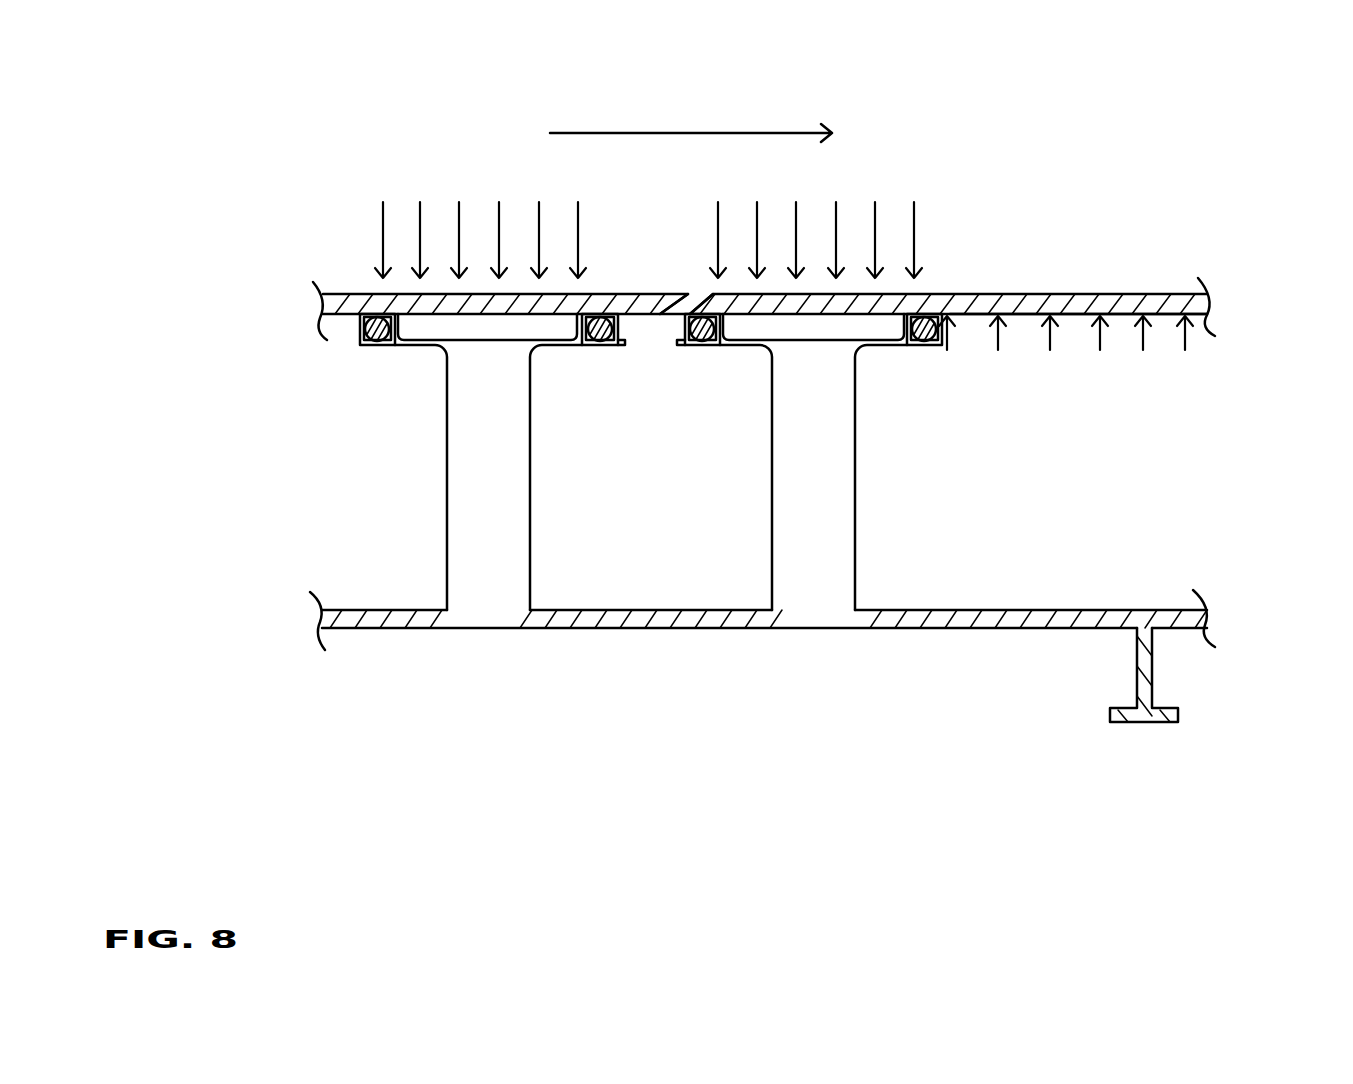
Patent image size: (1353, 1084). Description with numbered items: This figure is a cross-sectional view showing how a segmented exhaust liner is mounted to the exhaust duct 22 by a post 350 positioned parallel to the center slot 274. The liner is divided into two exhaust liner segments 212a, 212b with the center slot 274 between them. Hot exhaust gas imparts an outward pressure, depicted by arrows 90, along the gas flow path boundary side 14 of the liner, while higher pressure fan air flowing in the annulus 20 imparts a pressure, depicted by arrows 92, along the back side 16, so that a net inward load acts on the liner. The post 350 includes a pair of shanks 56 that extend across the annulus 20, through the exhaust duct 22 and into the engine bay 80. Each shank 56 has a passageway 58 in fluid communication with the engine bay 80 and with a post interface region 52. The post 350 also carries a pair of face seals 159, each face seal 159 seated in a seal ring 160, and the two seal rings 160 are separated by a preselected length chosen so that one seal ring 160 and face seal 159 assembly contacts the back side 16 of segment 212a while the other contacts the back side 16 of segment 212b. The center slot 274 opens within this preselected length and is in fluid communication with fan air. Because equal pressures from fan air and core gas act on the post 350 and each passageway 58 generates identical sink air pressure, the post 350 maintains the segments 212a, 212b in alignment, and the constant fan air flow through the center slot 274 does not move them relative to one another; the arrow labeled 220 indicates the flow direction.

The gas flow path boundary side 14 is at (1047, 295).
The back side 16 is at (1073, 315).
The annulus 20 is at (405, 537).
The exhaust duct 22 is at (1168, 615).
The post interface region 52 is at (538, 330).
The shanks 56 is at (770, 482).
The passageway 58 is at (508, 592).
The engine bay 80 is at (450, 775).
The arrows (outward pressure) 90 is at (382, 228).
The arrows (fan air pressure) 92 is at (1000, 340).
The face seal 159 is at (687, 345).
The seal ring 160 is at (358, 328).
The exhaust liner segment 212a is at (338, 292).
The exhaust liner segment 212b is at (1207, 300).
The flow direction 220 is at (757, 133).
The center slot 274 is at (684, 295).
The post 350 is at (385, 461).